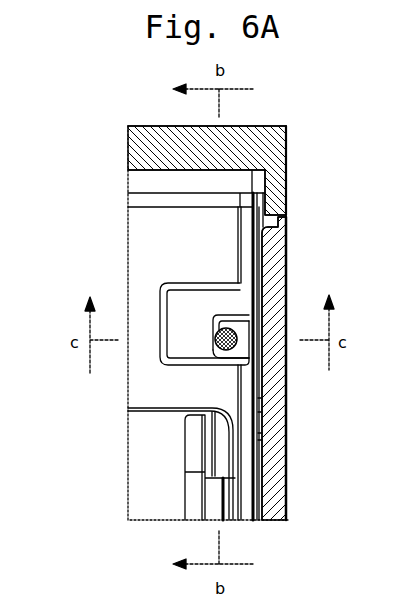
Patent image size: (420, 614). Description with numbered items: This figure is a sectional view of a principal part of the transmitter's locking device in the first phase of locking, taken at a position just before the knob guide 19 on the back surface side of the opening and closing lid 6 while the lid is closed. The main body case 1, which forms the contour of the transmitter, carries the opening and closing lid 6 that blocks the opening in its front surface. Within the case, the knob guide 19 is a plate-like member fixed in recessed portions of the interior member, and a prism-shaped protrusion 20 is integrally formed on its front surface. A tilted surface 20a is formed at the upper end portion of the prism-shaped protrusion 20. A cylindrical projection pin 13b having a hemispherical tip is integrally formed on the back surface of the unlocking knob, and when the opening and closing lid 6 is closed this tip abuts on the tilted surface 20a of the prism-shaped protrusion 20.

The main body case 1 is at (288, 148).
The opening and closing lid 6 is at (289, 466).
The knob guide 19 is at (178, 302).
The prism-shaped protrusion 20 is at (240, 341).
The tilted surface 20a is at (220, 323).
The projection pin 13b is at (220, 331).